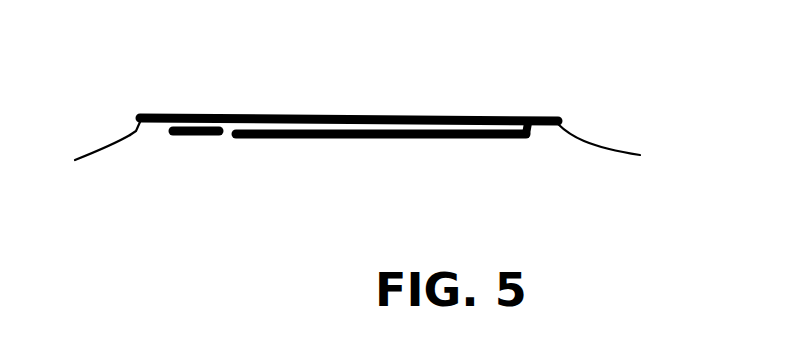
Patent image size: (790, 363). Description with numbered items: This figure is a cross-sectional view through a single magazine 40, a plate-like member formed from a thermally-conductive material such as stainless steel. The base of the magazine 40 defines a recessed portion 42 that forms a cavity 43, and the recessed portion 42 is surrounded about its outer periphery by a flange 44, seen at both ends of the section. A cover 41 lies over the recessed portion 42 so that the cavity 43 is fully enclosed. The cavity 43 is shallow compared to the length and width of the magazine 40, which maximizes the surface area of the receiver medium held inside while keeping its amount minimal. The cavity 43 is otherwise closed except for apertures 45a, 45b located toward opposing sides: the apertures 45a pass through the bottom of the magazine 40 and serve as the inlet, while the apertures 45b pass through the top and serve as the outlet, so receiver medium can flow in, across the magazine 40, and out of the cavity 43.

The magazine 40 is at (392, 76).
The cover 41 is at (268, 114).
The recessed portion 42 is at (374, 139).
The cavity 43 is at (444, 139).
The flange 44 is at (360, 156).
The inlet apertures 45a is at (222, 137).
The outlet apertures 45b is at (469, 116).